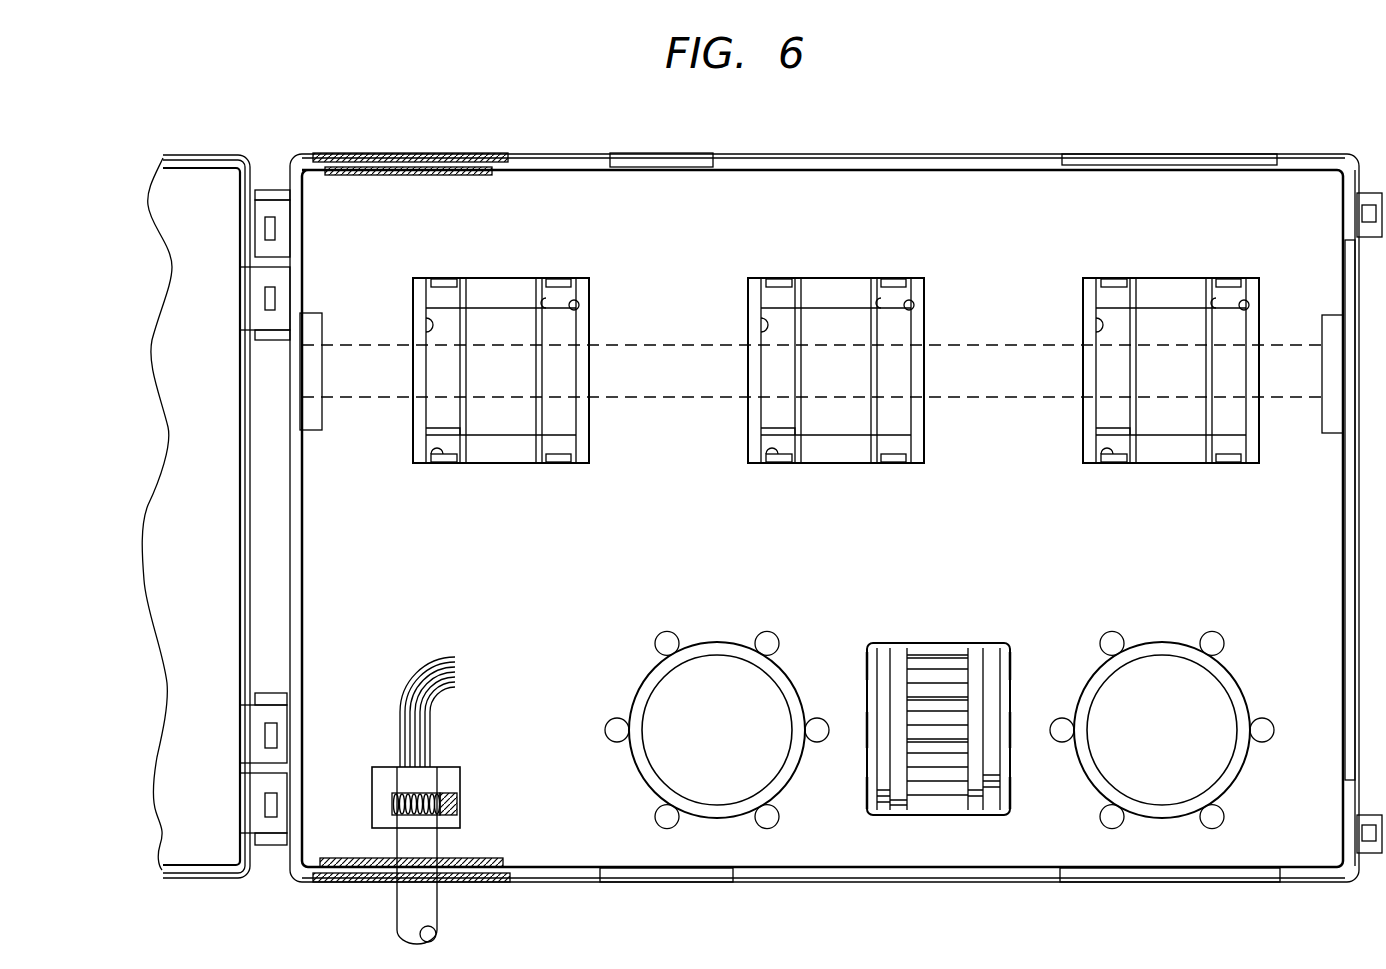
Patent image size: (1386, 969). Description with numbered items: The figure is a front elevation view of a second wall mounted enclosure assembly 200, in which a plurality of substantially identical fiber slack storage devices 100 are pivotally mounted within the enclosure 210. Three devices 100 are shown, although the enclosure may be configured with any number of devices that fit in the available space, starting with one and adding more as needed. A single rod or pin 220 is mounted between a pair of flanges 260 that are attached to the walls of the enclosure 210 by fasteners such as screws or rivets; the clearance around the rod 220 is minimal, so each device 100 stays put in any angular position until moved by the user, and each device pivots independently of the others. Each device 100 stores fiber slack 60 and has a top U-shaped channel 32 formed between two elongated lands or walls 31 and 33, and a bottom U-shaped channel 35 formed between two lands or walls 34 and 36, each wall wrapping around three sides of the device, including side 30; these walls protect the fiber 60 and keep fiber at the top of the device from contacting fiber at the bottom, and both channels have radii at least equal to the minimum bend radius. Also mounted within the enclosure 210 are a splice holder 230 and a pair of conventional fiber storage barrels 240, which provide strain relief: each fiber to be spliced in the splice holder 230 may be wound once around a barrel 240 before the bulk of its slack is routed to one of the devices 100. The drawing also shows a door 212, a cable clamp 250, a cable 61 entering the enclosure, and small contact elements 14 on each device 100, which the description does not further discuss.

The enclosure assembly 200 is at (748, 113).
The enclosure 210 is at (1007, 153).
The door 212 is at (188, 151).
The rod 220 is at (975, 398).
The splice holder 230 is at (937, 646).
The fiber storage barrels 240 is at (717, 640).
The cable clamp 250 is at (461, 785).
The flanges 260 is at (319, 432).
The device 100 is at (506, 254).
The contact terminal 14 is at (564, 278).
The side 30 is at (512, 385).
The land 31 is at (456, 438).
The top U-shaped channel 32 is at (472, 320).
The land 33 is at (426, 321).
The land 34 is at (546, 302).
The bottom U-shaped channel 35 is at (577, 370).
The land 36 is at (579, 305).
The fiber slack 60 is at (457, 648).
The cable 61 is at (437, 843).